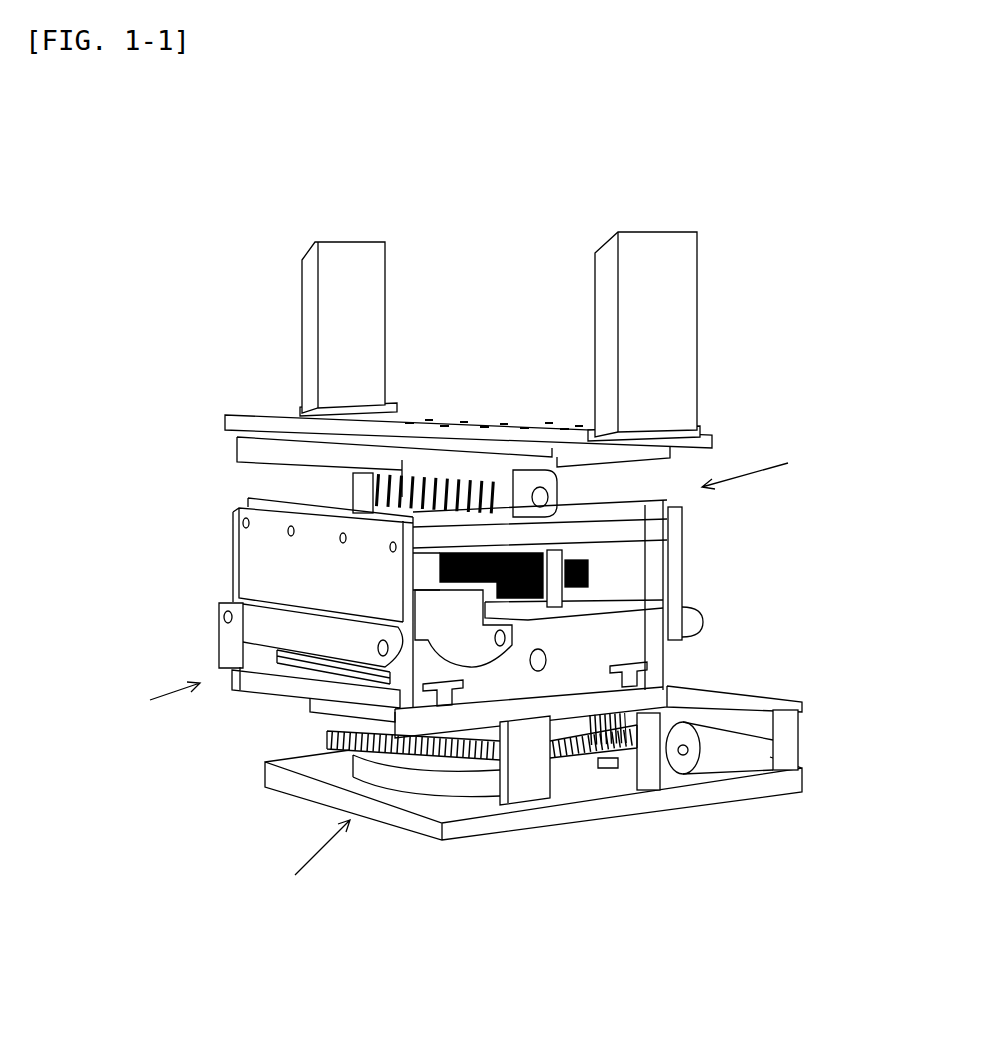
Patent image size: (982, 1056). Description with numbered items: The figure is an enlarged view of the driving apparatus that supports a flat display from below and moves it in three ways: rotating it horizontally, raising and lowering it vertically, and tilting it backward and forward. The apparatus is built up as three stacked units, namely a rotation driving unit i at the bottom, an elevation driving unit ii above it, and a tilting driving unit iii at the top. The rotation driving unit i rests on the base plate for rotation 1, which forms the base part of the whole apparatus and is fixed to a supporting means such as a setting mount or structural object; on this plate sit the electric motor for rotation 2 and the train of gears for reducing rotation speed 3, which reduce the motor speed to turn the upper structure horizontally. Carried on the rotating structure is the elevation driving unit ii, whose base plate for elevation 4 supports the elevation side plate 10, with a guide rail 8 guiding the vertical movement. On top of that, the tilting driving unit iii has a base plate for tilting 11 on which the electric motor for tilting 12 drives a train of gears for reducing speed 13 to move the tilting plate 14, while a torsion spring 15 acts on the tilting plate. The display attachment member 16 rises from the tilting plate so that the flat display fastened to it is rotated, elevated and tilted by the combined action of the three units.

The base plate for rotation 1 is at (613, 808).
The electric motor for rotation 2 is at (727, 768).
The train of gears for reducing rotation speed 3 is at (583, 784).
The base plate for elevation 4 is at (303, 697).
The guide rail 8 is at (277, 628).
The elevation side plate 10 is at (265, 547).
The base plate for tilting 11 is at (612, 537).
The electric motor for tilting 12 is at (440, 617).
The train of gears for reducing speed 13 is at (625, 562).
The tilting plate 14 is at (250, 448).
The torsion spring 15 is at (478, 487).
The display attachment member 16 is at (249, 332).
The rotation driving unit i is at (308, 868).
The elevation driving unit ii is at (127, 705).
The tilting driving unit iii is at (775, 462).